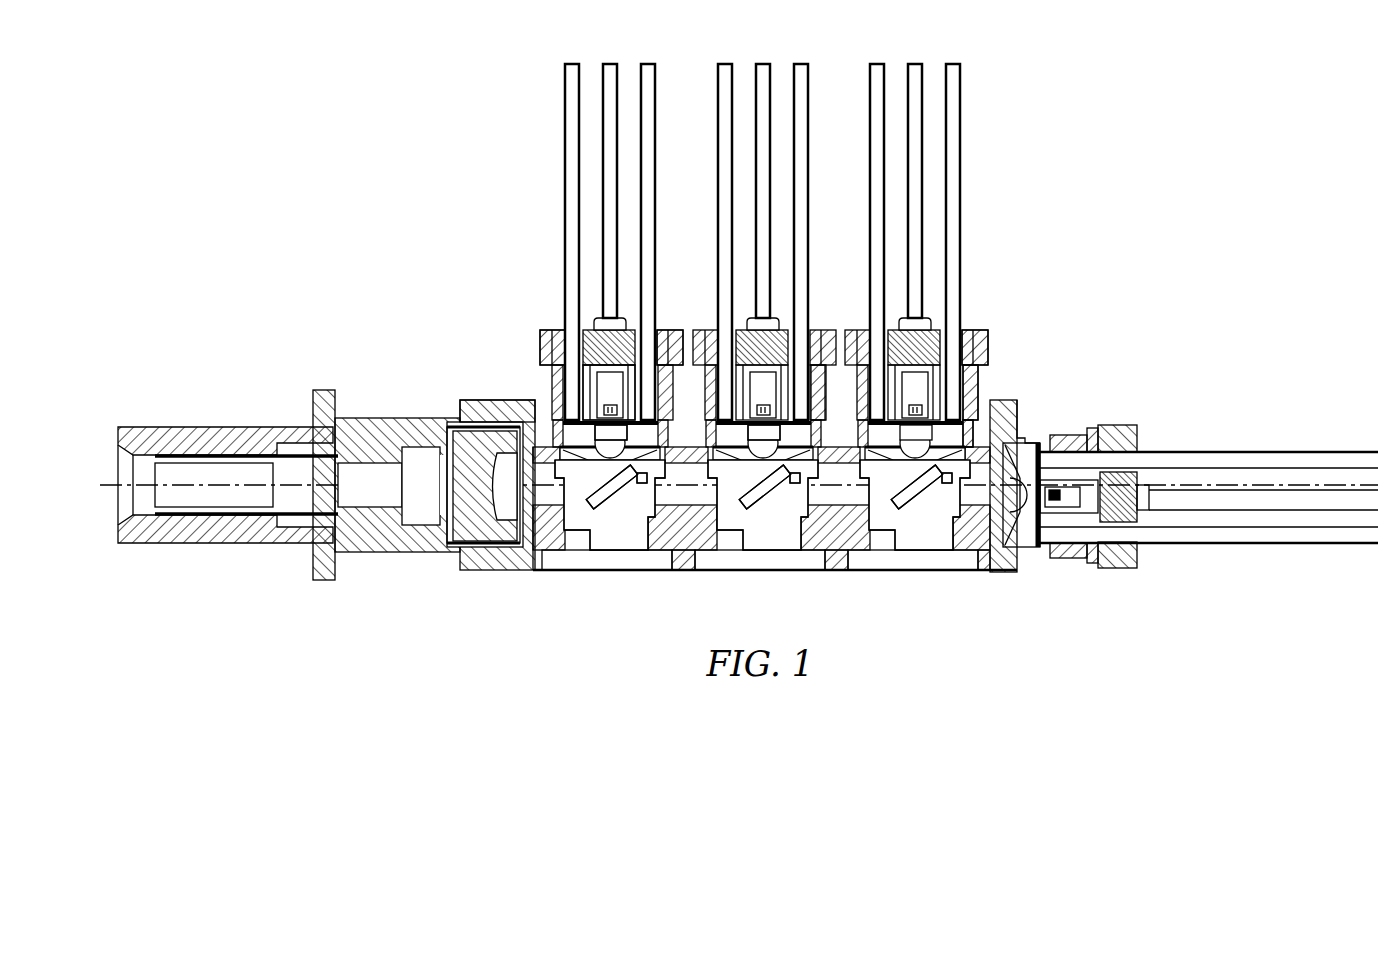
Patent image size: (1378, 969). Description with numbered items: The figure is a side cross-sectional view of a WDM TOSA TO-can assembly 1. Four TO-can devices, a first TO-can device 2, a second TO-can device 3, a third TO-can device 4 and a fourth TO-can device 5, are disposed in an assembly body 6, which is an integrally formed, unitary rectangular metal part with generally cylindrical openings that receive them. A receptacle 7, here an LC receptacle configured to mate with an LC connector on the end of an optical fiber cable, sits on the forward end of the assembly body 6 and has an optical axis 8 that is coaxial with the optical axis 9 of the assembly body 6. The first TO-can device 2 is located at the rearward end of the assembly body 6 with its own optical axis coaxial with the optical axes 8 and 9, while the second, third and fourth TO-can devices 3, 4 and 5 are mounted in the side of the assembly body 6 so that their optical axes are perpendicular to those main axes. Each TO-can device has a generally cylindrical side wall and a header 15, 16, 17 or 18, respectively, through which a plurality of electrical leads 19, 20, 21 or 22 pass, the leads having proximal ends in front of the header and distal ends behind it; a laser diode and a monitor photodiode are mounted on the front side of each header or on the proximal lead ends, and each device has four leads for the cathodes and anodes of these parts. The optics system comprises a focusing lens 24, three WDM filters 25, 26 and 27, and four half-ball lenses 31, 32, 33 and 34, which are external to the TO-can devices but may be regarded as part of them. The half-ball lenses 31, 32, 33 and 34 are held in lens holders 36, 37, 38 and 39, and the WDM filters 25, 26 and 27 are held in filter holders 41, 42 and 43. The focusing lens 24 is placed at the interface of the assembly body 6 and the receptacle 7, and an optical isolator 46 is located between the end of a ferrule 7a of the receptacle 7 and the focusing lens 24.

The WDM TOSA TO-can assembly 1 is at (270, 347).
The first TO-can device 2 is at (1090, 430).
The second TO-can device 3 is at (985, 378).
The third TO-can device 4 is at (828, 388).
The fourth TO-can device 5 is at (610, 415).
The assembly body 6 is at (478, 410).
The receptacle 7 is at (372, 425).
The ferrule 7a is at (355, 487).
The optical axis of the receptacle 8 is at (222, 487).
The optical axis of the assembly body 9 is at (707, 487).
The header 15 is at (1130, 425).
The header 16 is at (988, 345).
The header 17 is at (705, 335).
The header 18 is at (550, 335).
The electrical leads 19 is at (1203, 460).
The electrical leads 20 is at (875, 155).
The electrical leads 21 is at (723, 155).
The electrical leads 22 is at (570, 155).
The focusing lens 24 is at (512, 505).
The WDM filter 25 is at (930, 508).
The WDM filter 26 is at (768, 500).
The WDM filter 27 is at (618, 500).
The half-ball lens 31 is at (1022, 505).
The half-ball lens 32 is at (818, 482).
The half-ball lens 33 is at (796, 492).
The half-ball lens 34 is at (630, 478).
The lens holder 36 is at (1040, 440).
The lens holder 37 is at (974, 446).
The lens holder 38 is at (790, 437).
The lens holder 39 is at (640, 437).
The filter holder 41 is at (953, 527).
The filter holder 42 is at (798, 527).
The filter holder 43 is at (645, 527).
The optical isolator 46 is at (413, 507).